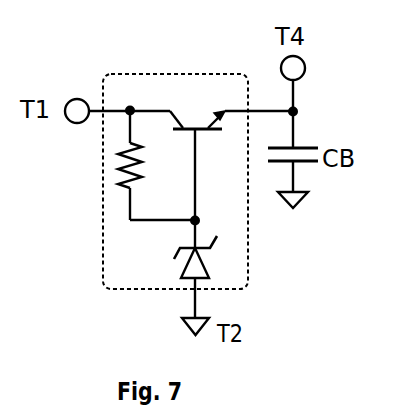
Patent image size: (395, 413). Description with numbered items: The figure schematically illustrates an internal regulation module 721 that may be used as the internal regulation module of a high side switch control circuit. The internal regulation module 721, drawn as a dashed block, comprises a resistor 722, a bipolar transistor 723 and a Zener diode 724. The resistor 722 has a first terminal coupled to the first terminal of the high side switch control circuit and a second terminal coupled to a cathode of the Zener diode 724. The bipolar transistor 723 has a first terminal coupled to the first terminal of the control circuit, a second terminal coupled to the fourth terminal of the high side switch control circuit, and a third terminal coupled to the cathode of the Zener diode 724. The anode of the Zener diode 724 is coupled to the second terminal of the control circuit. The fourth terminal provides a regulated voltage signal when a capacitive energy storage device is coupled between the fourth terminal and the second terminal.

The internal regulation module 721 is at (165, 73).
The resistor 722 is at (110, 162).
The bipolar transistor 723 is at (203, 134).
The Zener diode 724 is at (163, 267).